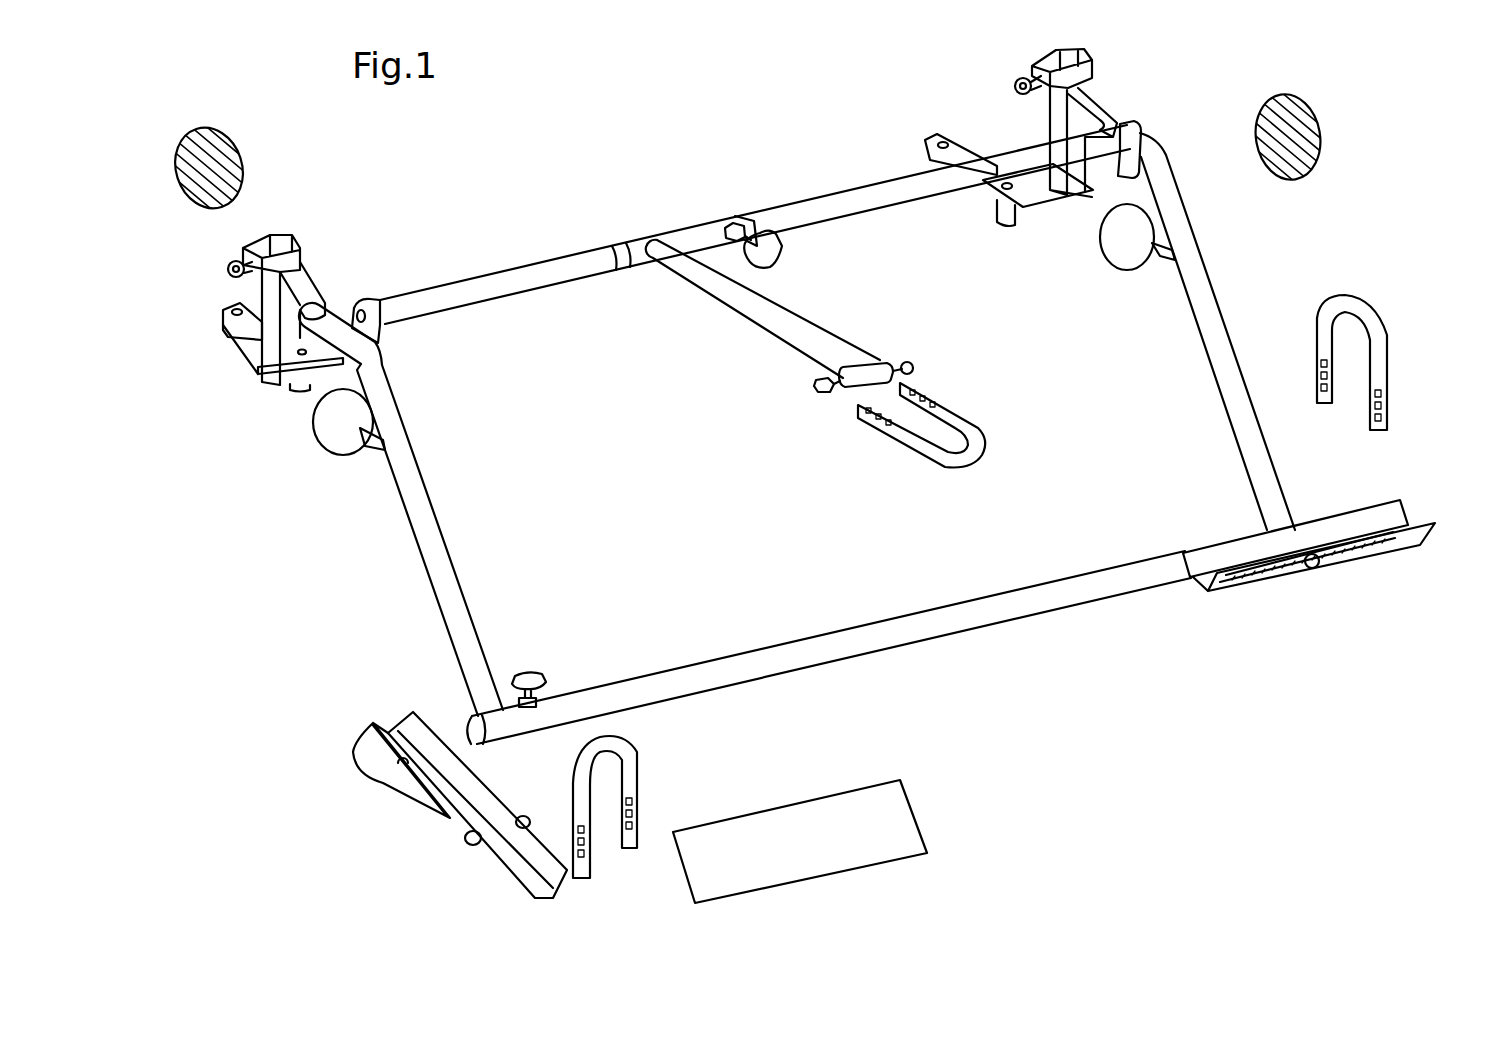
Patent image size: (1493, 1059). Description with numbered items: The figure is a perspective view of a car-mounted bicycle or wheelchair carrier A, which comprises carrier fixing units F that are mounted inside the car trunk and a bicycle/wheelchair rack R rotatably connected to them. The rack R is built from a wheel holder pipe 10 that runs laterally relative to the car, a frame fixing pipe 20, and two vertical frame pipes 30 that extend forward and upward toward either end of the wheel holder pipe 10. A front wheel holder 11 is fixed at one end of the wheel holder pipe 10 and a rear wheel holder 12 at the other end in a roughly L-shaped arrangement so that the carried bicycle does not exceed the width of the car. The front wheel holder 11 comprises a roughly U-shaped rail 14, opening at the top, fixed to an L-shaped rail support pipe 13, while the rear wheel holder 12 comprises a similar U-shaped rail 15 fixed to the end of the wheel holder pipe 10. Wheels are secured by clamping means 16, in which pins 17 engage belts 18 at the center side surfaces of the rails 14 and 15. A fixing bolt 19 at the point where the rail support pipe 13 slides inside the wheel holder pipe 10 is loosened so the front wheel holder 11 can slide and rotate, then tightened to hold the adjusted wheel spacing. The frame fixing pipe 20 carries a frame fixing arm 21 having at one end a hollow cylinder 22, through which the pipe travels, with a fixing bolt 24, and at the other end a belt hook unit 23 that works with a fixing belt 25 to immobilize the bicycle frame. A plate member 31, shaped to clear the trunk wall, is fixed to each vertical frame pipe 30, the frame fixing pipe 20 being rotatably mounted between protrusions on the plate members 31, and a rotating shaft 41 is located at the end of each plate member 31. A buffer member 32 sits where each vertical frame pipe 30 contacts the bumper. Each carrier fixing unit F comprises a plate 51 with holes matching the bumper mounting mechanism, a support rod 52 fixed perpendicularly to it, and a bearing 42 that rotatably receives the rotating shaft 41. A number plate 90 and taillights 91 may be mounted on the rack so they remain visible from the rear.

The wheel holder pipe 10 is at (973, 630).
The front wheel holder 11 is at (363, 689).
The rear wheel holder 12 is at (1328, 544).
The rail support pipe 13 is at (427, 809).
The rail 14 is at (510, 882).
The rail 15 is at (1385, 537).
The clamping means 16 is at (663, 773).
The pin 17 is at (1315, 570).
The belt 18 is at (1357, 390).
The fixing bolt 19 is at (527, 672).
The frame fixing pipe 20 is at (525, 264).
The frame fixing arm 21 is at (783, 343).
The hollow cylinder 22 is at (635, 239).
The belt hook unit 23 is at (820, 393).
The fixing bolt 24 is at (780, 252).
The fixing belt 25 is at (908, 452).
The vertical frame pipe 30 is at (1225, 424).
The plate member 31 is at (1100, 76).
The buffer member 32 is at (1105, 258).
The rotating shaft 41 is at (1015, 85).
The bearing 42 is at (297, 233).
The plate 51 is at (272, 390).
The support rod 52 is at (232, 343).
The number plate 90 is at (875, 782).
The taillight 91 is at (242, 152).
The car-mounted bicycle or wheelchair carrier A is at (1382, 105).
The bicycle/wheelchair rack R is at (1322, 240).
The carrier fixing unit F is at (176, 400).